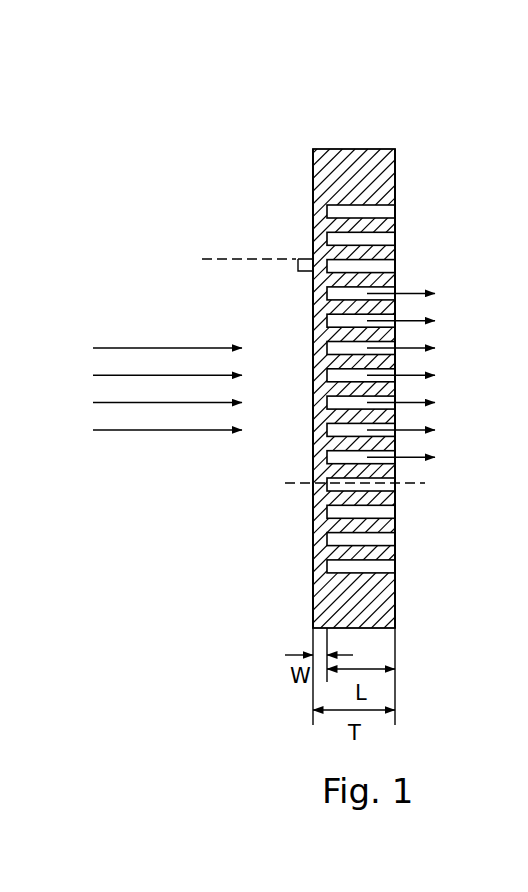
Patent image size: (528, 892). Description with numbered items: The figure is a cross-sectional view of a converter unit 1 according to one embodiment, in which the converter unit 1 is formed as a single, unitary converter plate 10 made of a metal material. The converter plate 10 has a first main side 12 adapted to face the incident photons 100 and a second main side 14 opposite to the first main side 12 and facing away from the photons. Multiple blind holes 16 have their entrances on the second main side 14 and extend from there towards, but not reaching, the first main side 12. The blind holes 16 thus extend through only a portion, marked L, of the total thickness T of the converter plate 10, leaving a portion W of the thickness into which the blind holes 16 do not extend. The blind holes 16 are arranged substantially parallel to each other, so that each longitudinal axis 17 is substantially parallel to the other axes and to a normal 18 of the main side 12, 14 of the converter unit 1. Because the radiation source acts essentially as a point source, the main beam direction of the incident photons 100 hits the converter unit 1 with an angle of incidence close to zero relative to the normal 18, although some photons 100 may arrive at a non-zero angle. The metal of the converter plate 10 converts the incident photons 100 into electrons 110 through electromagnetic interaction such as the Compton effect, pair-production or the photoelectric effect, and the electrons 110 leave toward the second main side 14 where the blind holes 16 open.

The converter unit 1 is at (258, 121).
The converter plate 10 is at (355, 149).
The first main side 12 is at (313, 174).
The second main side 14 is at (395, 172).
The blind holes 16 is at (385, 264).
The longitudinal axis 17 is at (415, 483).
The normal 18 is at (232, 259).
The incident photons 100 is at (163, 348).
The electrons 110 is at (420, 375).